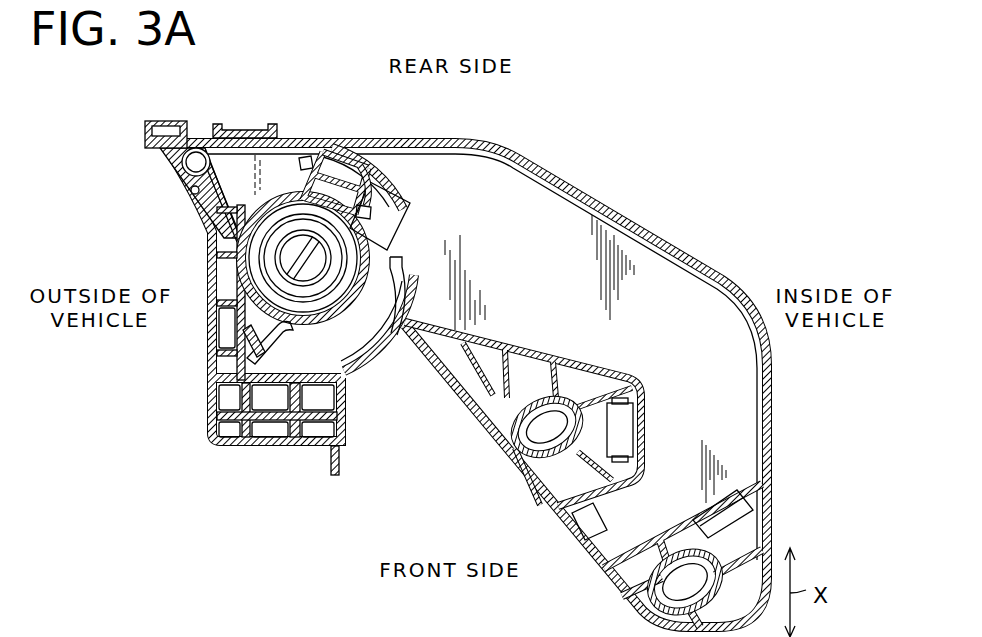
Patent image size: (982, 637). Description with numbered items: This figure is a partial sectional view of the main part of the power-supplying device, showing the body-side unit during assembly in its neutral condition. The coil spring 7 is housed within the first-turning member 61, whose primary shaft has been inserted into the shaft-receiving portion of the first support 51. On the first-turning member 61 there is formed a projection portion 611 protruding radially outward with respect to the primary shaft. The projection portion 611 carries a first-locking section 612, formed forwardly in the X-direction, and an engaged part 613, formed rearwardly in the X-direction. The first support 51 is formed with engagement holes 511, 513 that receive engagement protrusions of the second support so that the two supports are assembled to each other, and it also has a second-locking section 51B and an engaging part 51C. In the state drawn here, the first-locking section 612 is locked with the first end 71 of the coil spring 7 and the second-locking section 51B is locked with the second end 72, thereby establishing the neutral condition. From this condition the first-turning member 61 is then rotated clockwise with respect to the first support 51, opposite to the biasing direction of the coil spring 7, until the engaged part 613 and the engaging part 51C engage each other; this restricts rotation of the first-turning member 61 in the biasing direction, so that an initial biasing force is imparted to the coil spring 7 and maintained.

The coil spring 7 is at (250, 243).
The first support 51 is at (562, 212).
The second-locking section 51B is at (284, 353).
The engaging part 51C is at (405, 338).
The engagement hole 511 is at (620, 427).
The engagement hole 513 is at (248, 131).
The first-turning member 61 is at (334, 153).
The projection portion 611 is at (357, 142).
The first-locking section 612 is at (373, 180).
The engaged part 613 is at (305, 153).
The first end 71 is at (374, 197).
The second end 72 is at (263, 362).